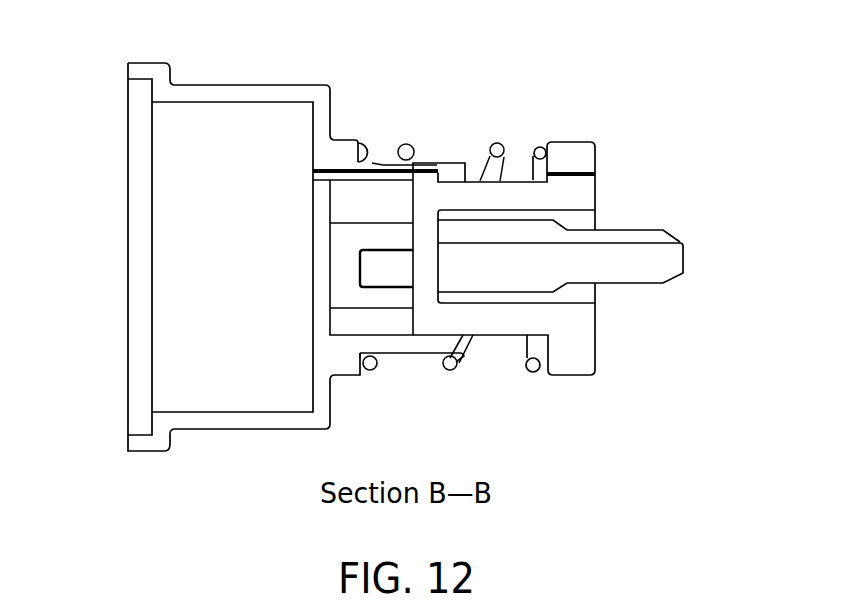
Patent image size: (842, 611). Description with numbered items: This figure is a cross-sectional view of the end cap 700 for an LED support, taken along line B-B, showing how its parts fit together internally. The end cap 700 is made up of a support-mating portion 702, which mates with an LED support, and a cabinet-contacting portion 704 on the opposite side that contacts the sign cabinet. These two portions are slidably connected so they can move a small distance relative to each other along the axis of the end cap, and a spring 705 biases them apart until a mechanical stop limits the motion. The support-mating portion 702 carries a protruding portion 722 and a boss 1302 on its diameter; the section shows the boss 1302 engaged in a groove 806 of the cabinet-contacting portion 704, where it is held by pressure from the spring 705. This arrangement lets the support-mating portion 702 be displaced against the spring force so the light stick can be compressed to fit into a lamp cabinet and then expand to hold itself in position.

The end cap 700 is at (410, 231).
The support-mating portion 702 is at (575, 140).
The cabinet-contacting portion 704 is at (147, 63).
The spring 705 is at (452, 370).
The protruding portion 722 is at (678, 238).
The groove 806 is at (453, 175).
The boss 1302 is at (425, 177).